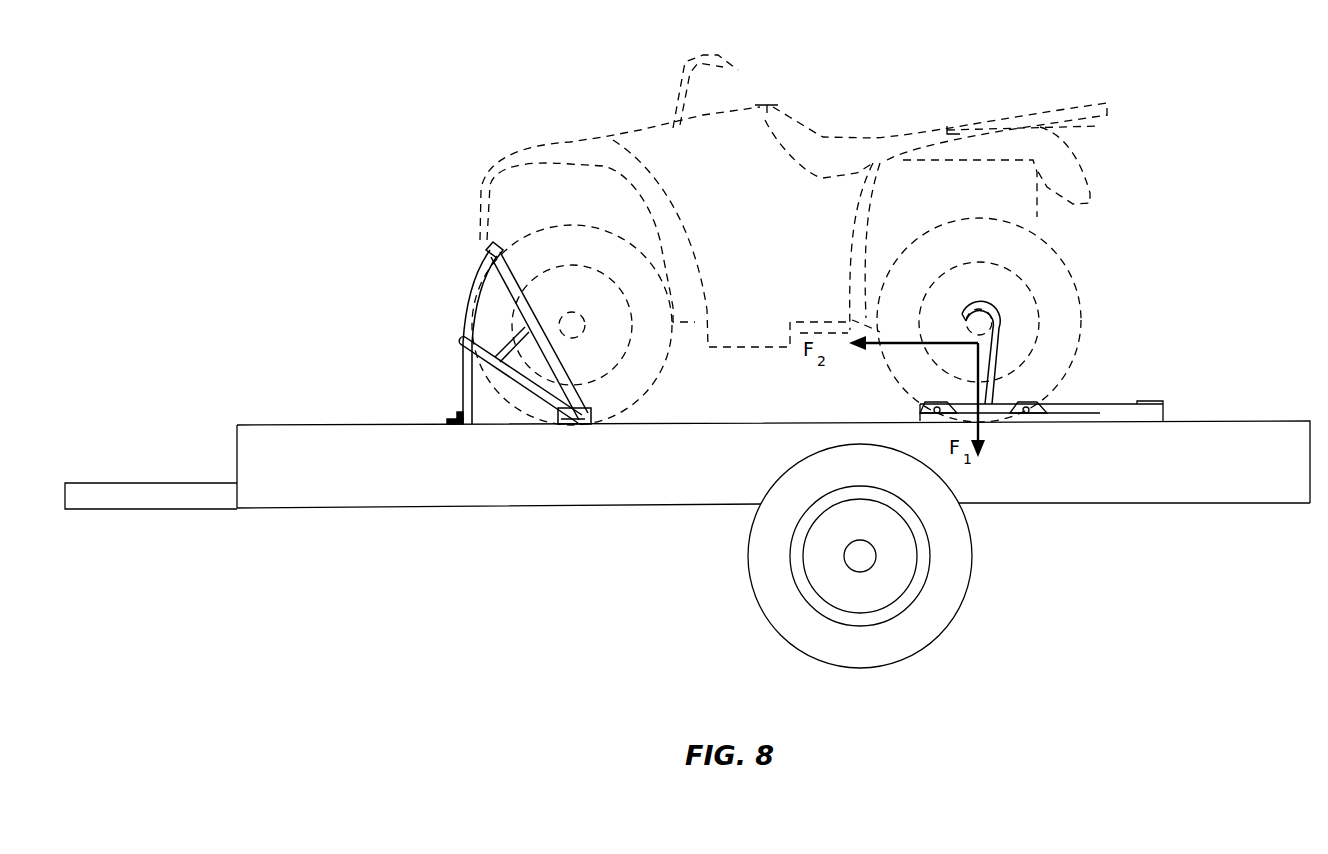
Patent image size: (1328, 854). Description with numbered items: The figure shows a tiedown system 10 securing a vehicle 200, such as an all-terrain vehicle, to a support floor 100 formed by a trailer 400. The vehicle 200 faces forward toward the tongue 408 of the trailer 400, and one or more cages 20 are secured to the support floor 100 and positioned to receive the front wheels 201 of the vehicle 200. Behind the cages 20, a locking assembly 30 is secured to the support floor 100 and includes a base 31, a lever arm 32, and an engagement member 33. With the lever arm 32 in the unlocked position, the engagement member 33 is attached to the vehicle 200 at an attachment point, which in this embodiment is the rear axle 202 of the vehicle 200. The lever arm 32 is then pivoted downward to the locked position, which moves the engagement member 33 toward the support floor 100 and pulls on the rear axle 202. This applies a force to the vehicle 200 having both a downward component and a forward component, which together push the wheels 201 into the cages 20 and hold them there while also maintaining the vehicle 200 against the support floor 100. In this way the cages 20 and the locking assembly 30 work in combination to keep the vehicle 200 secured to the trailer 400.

The tiedown system 10 is at (698, 549).
The support floor 100 is at (1250, 421).
The trailer 400 is at (1180, 468).
The tongue 408 is at (135, 495).
The cage 20 is at (470, 280).
The front wheel 201 is at (500, 393).
The vehicle 200 is at (995, 155).
The rear axle 202 is at (983, 320).
The engagement member 33 is at (997, 367).
The lever arm 32 is at (1080, 413).
The locking assembly 30 is at (1033, 437).
The base 31 is at (1000, 415).